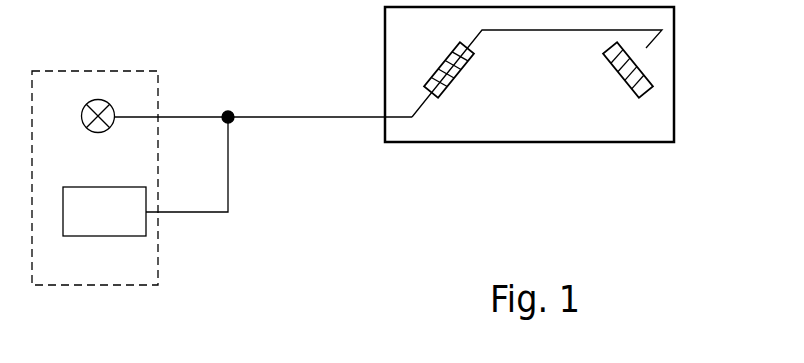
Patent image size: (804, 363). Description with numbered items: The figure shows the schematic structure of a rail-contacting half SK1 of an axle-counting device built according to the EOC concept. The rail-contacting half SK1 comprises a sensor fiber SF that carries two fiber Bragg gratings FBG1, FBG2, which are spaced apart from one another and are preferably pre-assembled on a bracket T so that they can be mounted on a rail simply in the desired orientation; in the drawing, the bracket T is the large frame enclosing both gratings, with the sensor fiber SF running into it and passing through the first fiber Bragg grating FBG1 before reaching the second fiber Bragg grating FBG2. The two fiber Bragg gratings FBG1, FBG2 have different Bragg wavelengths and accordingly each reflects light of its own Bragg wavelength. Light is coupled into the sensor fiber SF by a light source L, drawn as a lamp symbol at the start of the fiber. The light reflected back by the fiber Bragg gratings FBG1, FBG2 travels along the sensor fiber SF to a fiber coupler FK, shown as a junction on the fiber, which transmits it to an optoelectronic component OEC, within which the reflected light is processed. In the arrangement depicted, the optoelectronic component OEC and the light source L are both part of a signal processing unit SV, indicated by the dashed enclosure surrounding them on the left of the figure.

The light source L is at (97, 99).
The signal processing unit SV is at (158, 254).
The optoelectronic component OEC is at (145, 176).
The fiber coupler FK is at (228, 104).
The sensor fiber SF is at (314, 116).
The bracket T is at (675, 71).
The first fiber Bragg grating FBG1 is at (447, 92).
The second fiber Bragg grating FBG2 is at (607, 80).
The rail-contacting half SK1 is at (629, 208).